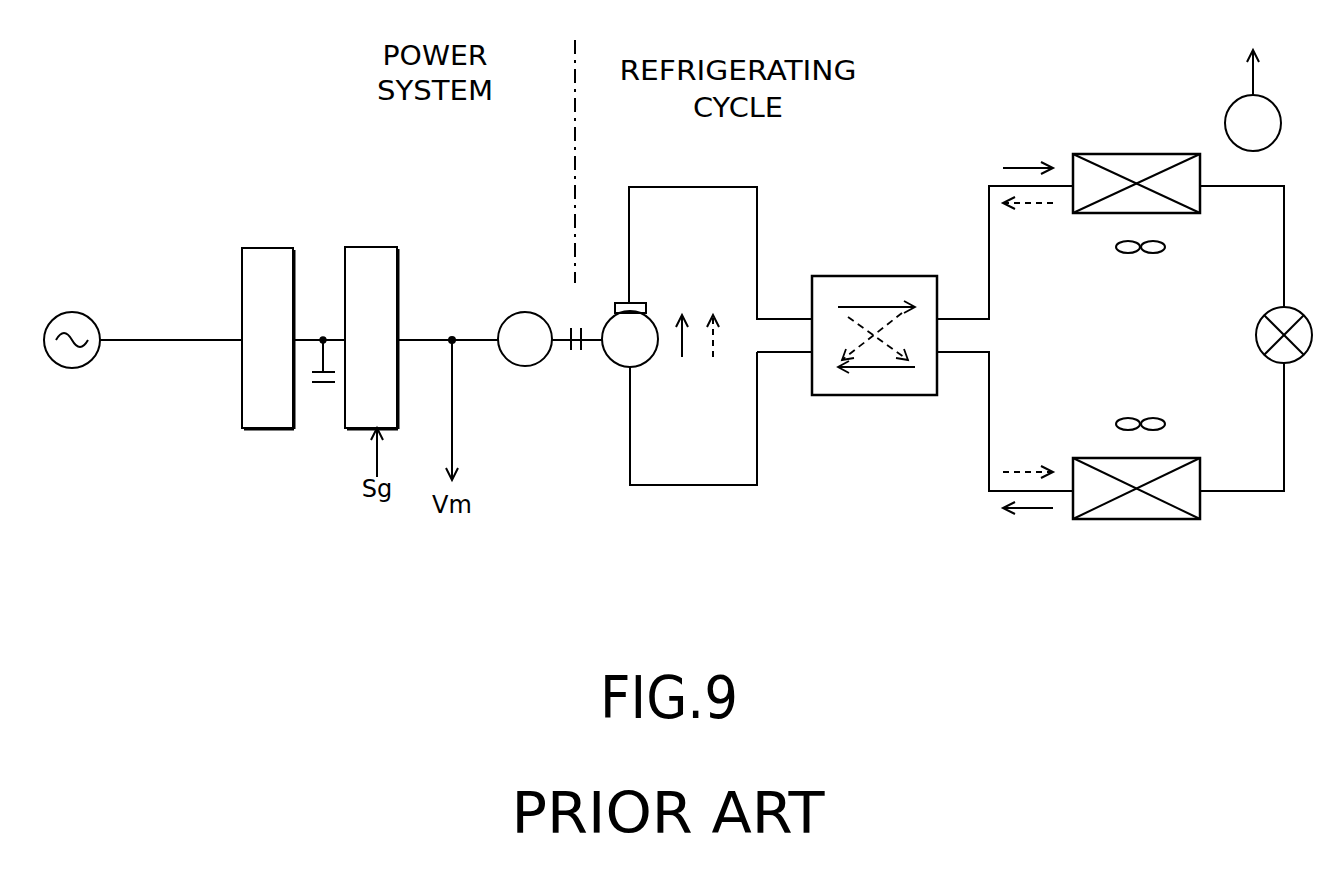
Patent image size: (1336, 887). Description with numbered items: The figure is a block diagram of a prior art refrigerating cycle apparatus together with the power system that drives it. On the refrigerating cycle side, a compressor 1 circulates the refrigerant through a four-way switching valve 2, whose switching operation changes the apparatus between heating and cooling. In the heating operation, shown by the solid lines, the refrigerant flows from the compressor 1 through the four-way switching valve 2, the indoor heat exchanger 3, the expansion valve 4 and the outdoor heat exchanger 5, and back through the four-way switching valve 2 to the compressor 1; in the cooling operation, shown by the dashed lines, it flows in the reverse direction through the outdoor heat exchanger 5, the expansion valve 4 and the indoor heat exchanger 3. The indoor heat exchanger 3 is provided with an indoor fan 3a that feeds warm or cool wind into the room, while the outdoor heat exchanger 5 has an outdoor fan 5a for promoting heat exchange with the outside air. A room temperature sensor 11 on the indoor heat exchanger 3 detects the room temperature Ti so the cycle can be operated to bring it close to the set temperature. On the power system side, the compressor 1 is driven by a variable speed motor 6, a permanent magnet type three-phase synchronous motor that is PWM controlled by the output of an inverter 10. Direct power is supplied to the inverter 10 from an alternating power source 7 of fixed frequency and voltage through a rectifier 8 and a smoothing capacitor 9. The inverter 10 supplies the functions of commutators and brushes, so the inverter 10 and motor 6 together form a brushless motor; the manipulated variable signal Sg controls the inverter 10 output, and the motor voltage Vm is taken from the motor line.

The compressor 1 is at (612, 365).
The four-way switching valve 2 is at (878, 277).
The indoor heat exchanger 3 is at (1130, 154).
The indoor fan 3a is at (1140, 253).
The expansion valve 4 is at (1297, 362).
The outdoor heat exchanger 5 is at (1140, 520).
The outdoor fan 5a is at (1140, 418).
The variable speed motor 6 is at (532, 313).
The alternating power source 7 is at (70, 312).
The rectifier 8 is at (277, 248).
The smoothing capacitor 9 is at (323, 387).
The inverter 10 is at (377, 247).
The room temperature sensor 11 is at (1235, 102).